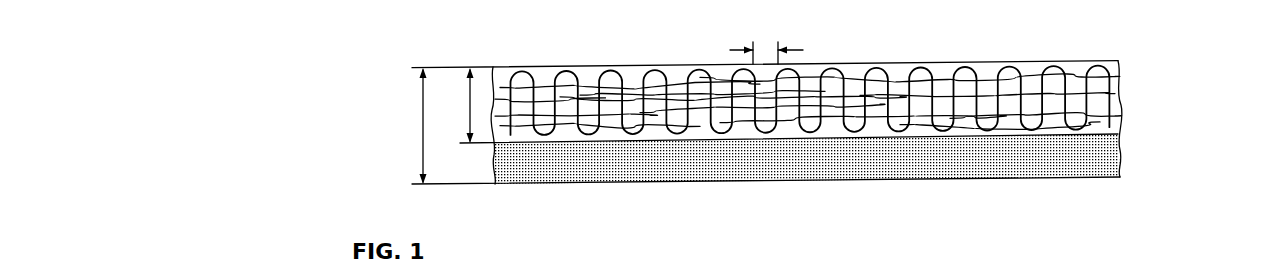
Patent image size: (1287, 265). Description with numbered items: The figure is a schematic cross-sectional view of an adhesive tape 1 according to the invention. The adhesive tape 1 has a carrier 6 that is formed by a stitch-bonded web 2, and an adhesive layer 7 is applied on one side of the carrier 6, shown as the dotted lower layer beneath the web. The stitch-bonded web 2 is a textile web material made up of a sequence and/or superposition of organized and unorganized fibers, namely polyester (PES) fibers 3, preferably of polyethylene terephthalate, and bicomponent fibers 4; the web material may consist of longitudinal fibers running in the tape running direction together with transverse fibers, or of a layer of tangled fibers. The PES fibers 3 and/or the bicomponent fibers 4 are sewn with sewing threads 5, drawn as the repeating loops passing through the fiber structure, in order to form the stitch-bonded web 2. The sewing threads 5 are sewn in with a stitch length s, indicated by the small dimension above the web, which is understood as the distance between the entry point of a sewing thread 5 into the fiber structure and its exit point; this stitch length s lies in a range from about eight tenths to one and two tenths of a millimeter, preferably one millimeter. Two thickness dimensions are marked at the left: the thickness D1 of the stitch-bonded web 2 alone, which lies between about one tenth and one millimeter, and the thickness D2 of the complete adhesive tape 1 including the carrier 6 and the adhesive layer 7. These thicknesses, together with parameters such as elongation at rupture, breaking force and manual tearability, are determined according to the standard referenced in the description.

The adhesive tape 1 is at (1130, 203).
The stitch-bonded web 2 is at (866, 140).
The carrier 6 is at (808, 154).
The PES fibers 3 is at (606, 136).
The bicomponent fibers 4 is at (918, 134).
The sewing threads 5 is at (791, 133).
The adhesive layer 7 is at (1113, 152).
The thickness of the stitch-bonded web D1 is at (470, 95).
The thickness of the adhesive tape D2 is at (422, 125).
The stitch length s is at (765, 43).